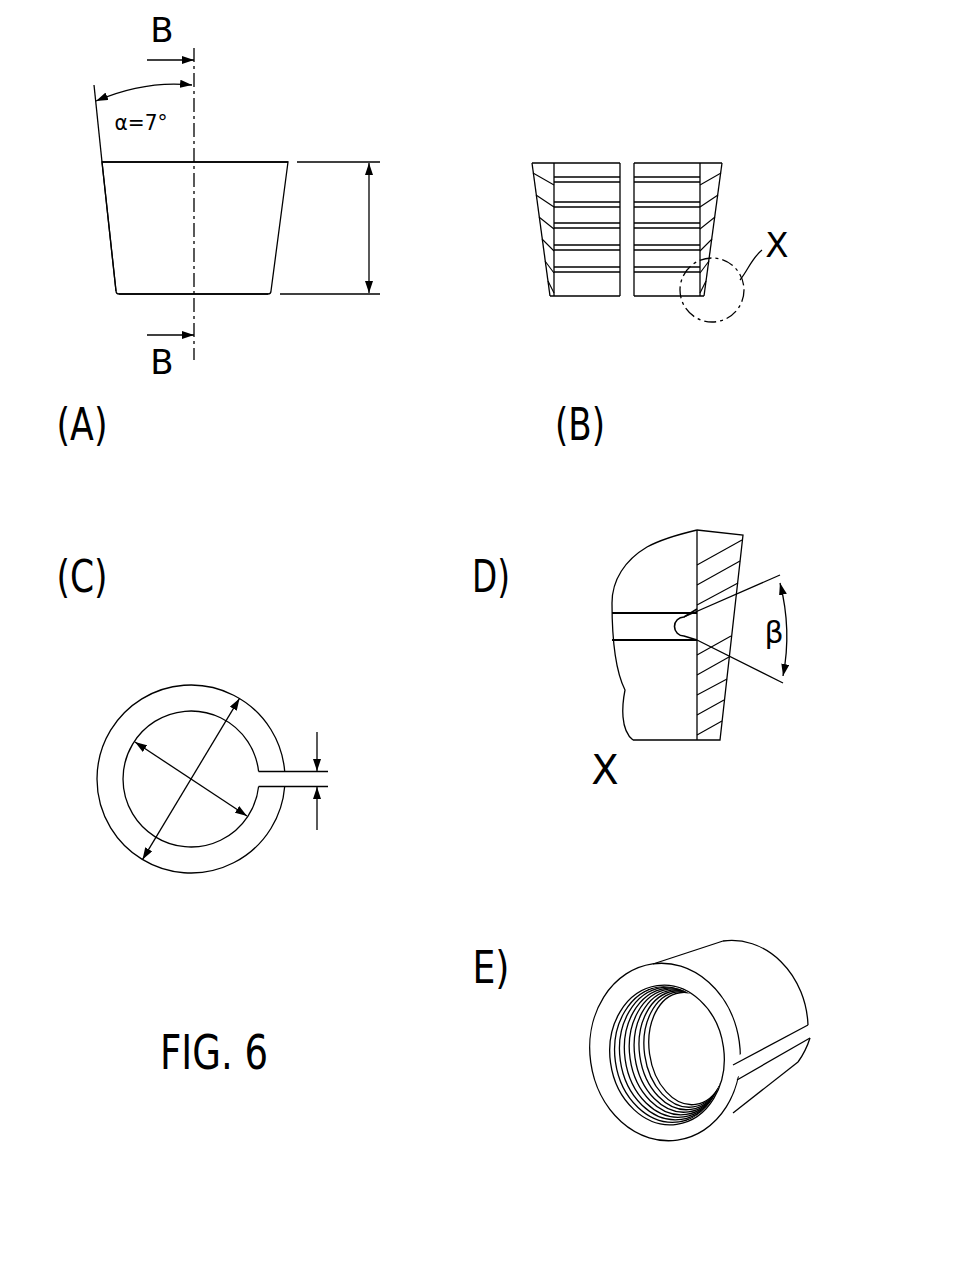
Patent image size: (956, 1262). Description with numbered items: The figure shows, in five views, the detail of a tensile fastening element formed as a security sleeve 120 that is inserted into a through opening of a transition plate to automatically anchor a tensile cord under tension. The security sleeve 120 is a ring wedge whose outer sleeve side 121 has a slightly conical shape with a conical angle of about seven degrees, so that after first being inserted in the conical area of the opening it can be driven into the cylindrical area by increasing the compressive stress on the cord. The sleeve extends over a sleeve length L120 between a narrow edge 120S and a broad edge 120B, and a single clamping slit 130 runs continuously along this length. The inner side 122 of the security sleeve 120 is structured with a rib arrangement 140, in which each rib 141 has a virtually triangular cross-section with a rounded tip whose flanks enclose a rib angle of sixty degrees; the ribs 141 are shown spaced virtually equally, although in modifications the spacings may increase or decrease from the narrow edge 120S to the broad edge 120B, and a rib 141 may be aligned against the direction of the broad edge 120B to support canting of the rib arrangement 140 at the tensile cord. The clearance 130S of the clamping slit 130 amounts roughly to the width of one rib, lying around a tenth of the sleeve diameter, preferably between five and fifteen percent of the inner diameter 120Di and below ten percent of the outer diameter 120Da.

The security sleeve 120 is at (308, 113).
The broad edge 120B is at (228, 160).
The narrow edge 120S is at (232, 296).
The outer sleeve side 121 is at (110, 240).
The inner side 122 is at (570, 280).
The rib arrangement 140 is at (597, 270).
The rib 141 is at (627, 625).
The clamping slit 130 is at (770, 1057).
The clearance of the clamping slit 130S is at (318, 733).
The inner diameter 120Di is at (160, 752).
The outer diameter 120Da is at (222, 737).
The sleeve length L120 is at (330, 228).